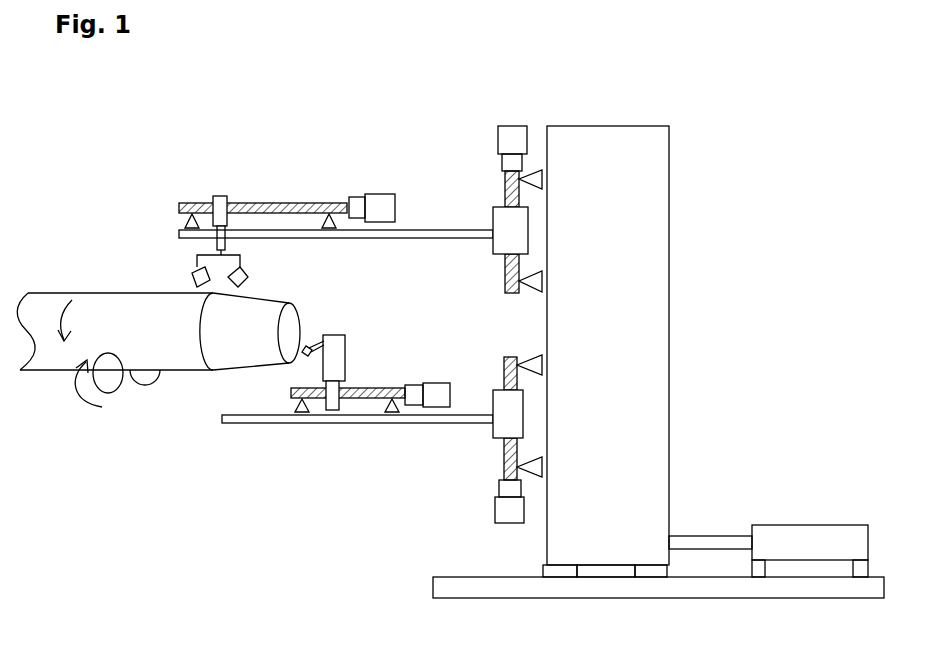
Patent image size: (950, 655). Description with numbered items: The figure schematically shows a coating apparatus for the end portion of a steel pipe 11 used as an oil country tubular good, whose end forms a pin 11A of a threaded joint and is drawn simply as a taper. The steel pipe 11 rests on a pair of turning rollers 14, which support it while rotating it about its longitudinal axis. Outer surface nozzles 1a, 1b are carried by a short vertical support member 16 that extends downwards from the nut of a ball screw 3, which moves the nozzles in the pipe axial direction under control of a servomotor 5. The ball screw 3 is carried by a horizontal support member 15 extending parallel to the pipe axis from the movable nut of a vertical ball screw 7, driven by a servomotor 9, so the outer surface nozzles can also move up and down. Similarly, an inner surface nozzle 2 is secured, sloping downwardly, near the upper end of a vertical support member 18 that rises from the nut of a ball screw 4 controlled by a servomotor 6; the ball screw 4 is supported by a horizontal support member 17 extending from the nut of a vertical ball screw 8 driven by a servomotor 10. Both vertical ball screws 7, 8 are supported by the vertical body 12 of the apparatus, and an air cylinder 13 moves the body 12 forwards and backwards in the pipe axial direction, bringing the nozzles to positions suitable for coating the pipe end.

The outer surface nozzle 1a is at (185, 277).
The outer surface nozzle 1b is at (245, 283).
The inner surface nozzle 2 is at (306, 344).
The ball screw 3 is at (232, 198).
The ball screw 4 is at (355, 382).
The servomotor 5 is at (360, 192).
The servomotor 6 is at (425, 382).
The ball screw 7 is at (485, 217).
The ball screw 8 is at (495, 382).
The servomotor 9 is at (500, 163).
The servomotor 10 is at (492, 520).
The steel pipe 11 is at (90, 308).
The pin 11A is at (250, 373).
The body 12 is at (606, 351).
The air cylinder 13 is at (768, 536).
The turning rollers 14 is at (113, 396).
The horizontal support member 15 is at (425, 239).
The vertical support member 16 is at (207, 242).
The horizontal support member 17 is at (352, 425).
The vertical support member 18 is at (345, 347).